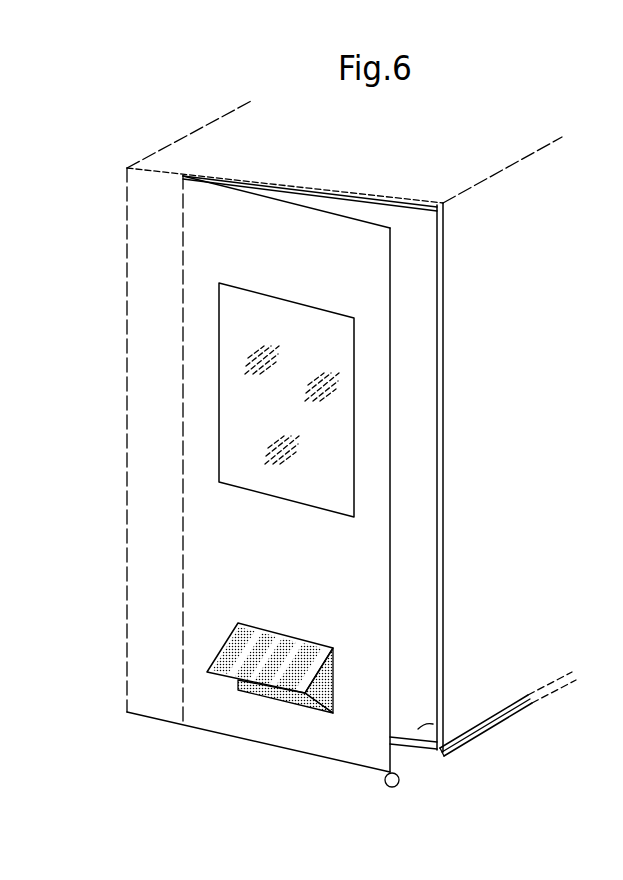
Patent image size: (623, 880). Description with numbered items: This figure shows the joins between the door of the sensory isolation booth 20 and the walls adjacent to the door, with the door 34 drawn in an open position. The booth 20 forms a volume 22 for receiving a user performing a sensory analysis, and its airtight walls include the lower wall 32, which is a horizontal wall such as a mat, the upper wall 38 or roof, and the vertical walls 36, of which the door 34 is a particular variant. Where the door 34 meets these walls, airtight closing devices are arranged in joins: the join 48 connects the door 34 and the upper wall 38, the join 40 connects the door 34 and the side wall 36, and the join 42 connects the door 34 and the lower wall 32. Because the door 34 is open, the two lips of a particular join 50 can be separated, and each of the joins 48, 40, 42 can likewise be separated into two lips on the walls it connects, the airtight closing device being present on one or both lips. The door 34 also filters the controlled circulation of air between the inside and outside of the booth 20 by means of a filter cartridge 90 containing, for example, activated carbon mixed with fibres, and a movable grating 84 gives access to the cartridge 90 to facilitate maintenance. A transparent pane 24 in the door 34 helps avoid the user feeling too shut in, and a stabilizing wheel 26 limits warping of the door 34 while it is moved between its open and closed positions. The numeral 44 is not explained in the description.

The booth 20 is at (97, 624).
The volume 22 is at (421, 693).
The pane 24 is at (287, 427).
The stabilizing wheel 26 is at (399, 783).
The lower wall 32 is at (450, 752).
The door 34 is at (297, 582).
The vertical wall 36 is at (169, 474).
The upper wall 38 is at (365, 157).
The join 40 is at (390, 445).
The join 42 is at (403, 730).
The hinge 44 is at (183, 242).
The join 48 is at (403, 207).
The join 50 is at (548, 280).
The movable grating 84 is at (243, 652).
The filter cartridge 90 is at (332, 697).